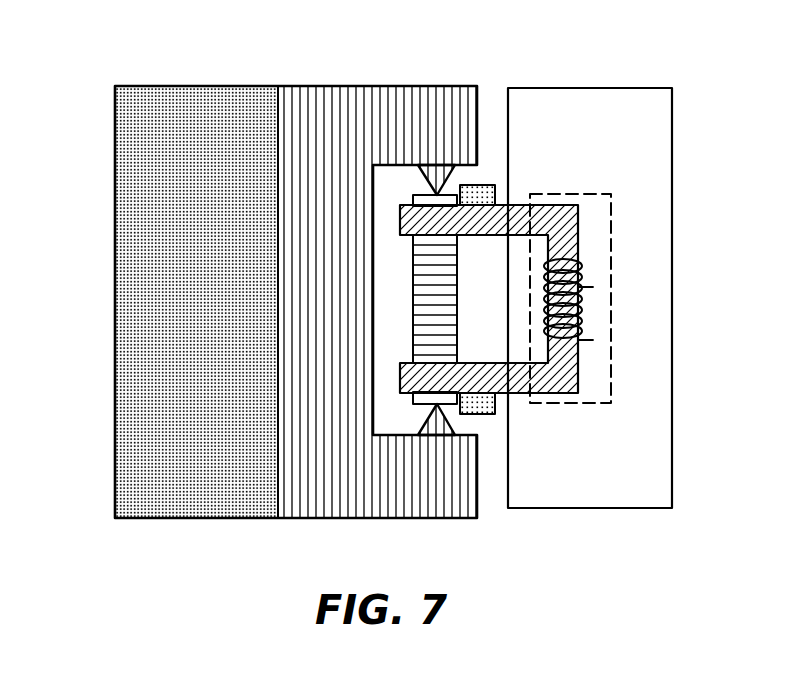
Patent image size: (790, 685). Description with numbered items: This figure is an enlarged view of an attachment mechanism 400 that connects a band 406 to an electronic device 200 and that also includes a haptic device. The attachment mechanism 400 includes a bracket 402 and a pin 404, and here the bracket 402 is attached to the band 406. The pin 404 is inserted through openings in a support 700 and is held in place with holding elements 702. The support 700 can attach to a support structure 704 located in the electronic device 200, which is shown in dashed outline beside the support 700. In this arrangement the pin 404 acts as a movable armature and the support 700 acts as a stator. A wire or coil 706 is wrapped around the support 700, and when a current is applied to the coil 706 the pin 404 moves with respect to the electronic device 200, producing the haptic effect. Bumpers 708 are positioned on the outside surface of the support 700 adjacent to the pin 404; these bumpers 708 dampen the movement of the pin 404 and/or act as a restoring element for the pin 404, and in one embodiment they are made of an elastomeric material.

The electronic device 200 is at (624, 508).
The attachment mechanism 400 is at (285, 299).
The bracket 402 is at (340, 518).
The pin 404 is at (458, 285).
The band 406 is at (115, 192).
The support 700 is at (578, 401).
The holding elements 702 is at (447, 421).
The support structure 704 is at (612, 240).
The coil 706 is at (603, 309).
The bumpers 708 is at (496, 195).